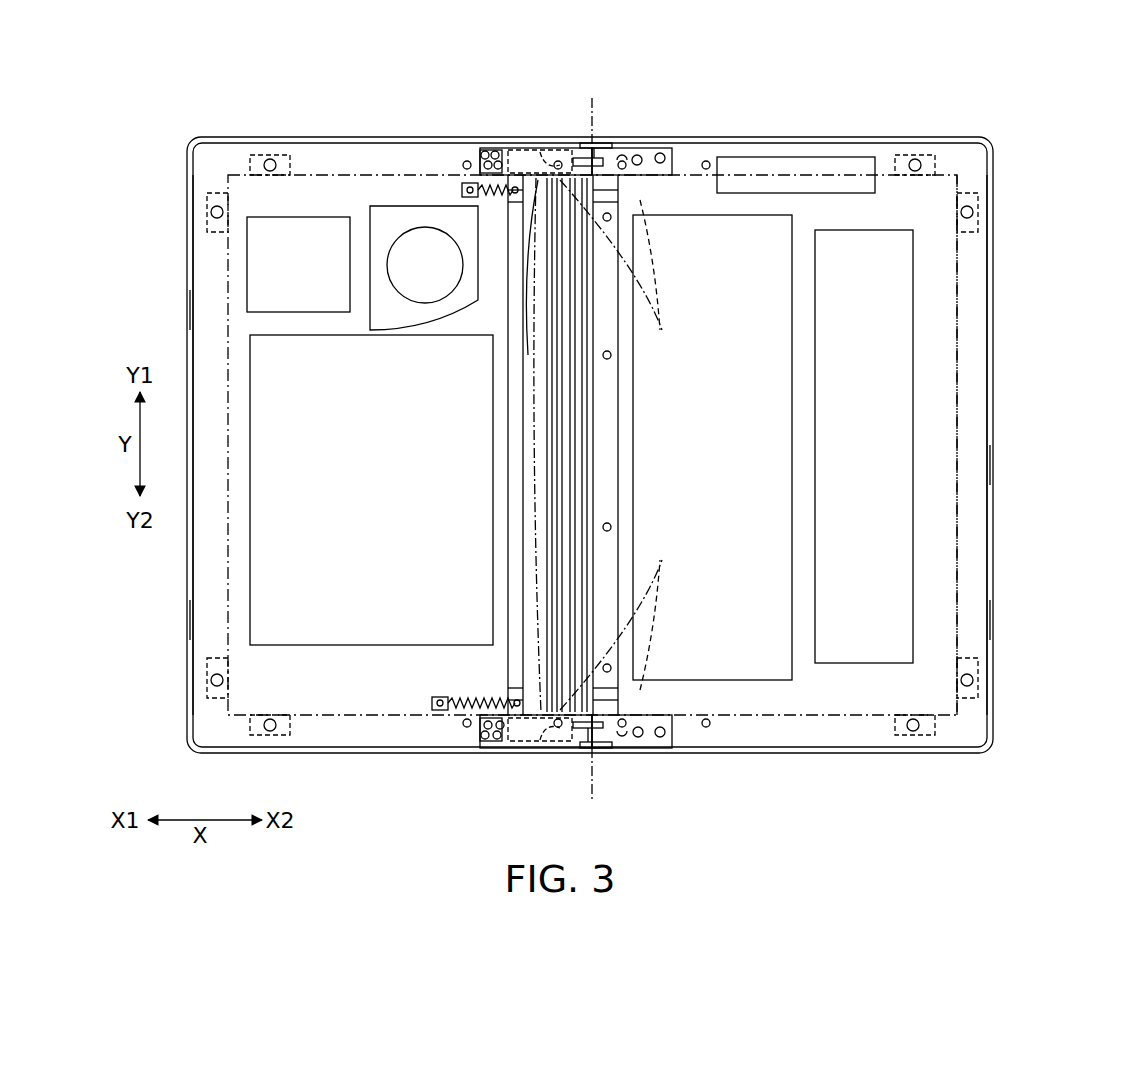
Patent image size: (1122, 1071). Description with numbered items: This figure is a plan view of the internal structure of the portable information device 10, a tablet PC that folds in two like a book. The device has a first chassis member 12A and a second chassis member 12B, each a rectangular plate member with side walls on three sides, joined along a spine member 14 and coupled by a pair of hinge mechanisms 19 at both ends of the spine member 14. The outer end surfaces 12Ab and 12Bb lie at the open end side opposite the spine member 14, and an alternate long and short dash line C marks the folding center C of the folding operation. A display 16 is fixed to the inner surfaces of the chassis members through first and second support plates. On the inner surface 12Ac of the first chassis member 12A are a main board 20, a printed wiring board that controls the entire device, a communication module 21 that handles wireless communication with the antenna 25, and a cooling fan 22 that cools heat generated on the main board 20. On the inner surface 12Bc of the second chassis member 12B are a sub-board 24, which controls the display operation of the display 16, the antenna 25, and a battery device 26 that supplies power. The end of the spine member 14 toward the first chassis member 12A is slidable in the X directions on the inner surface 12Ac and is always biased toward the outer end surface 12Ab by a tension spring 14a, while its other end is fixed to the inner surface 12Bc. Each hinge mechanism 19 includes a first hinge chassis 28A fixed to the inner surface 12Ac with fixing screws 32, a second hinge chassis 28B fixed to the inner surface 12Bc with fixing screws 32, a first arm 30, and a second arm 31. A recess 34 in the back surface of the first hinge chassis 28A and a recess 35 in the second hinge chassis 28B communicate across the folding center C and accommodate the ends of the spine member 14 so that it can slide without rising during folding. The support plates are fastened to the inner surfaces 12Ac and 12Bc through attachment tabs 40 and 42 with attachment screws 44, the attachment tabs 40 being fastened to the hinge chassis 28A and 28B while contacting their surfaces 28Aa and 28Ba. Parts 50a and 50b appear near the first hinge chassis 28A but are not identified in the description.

The portable information device 10 is at (101, 90).
The first chassis member 12A is at (242, 758).
The second chassis member 12B is at (990, 760).
The outer end surface of the first chassis member 12Ab is at (206, 620).
The inner surface of the first chassis member 12Ac is at (206, 310).
The outer end surface of the second chassis member 12Bb is at (990, 620).
The inner surface of the second chassis member 12Bc is at (940, 466).
The spine member 14 is at (612, 467).
The tension spring 14a is at (470, 190).
The display 16 is at (946, 172).
The hinge mechanism 19 is at (522, 150).
The main board 20 is at (265, 558).
The communication module 21 is at (268, 255).
The cooling fan 22 is at (377, 210).
The sub-board 24 is at (900, 327).
The antenna 25 is at (795, 158).
The battery device 26 is at (770, 410).
The first hinge chassis 28A is at (508, 148).
The surface of the first hinge chassis 28Aa is at (528, 355).
The second hinge chassis 28B is at (637, 153).
The surface of the second hinge chassis 28Ba is at (663, 160).
The first arm 30 is at (573, 146).
The second arm 31 is at (597, 148).
The fixing screws 32 is at (492, 152).
The recess 34 is at (540, 150).
The recess 35 is at (618, 162).
The attachment tabs 40 is at (538, 385).
The attachment tabs 42 is at (298, 162).
The attachment screws 44 is at (270, 158).
The first sliding member 50a is at (485, 154).
The second sliding member 50b is at (512, 193).
The folding center C is at (591, 449).